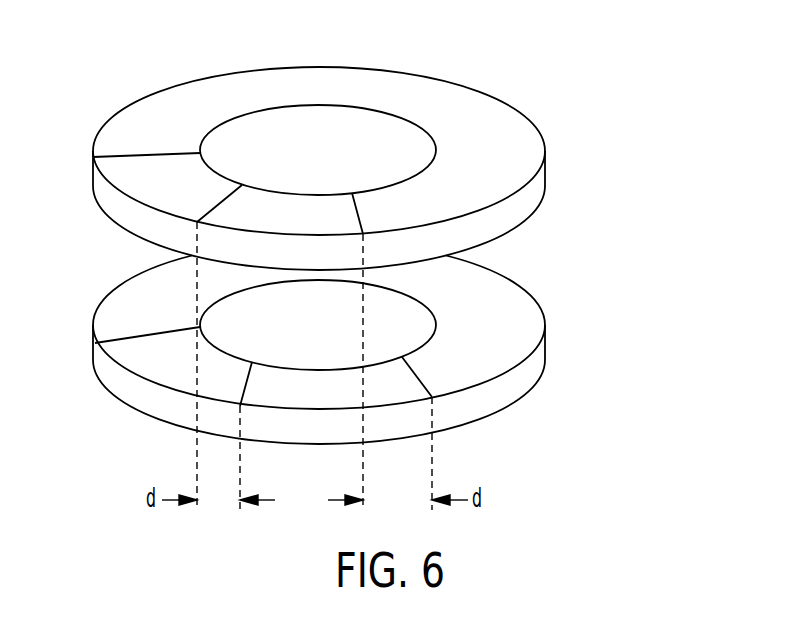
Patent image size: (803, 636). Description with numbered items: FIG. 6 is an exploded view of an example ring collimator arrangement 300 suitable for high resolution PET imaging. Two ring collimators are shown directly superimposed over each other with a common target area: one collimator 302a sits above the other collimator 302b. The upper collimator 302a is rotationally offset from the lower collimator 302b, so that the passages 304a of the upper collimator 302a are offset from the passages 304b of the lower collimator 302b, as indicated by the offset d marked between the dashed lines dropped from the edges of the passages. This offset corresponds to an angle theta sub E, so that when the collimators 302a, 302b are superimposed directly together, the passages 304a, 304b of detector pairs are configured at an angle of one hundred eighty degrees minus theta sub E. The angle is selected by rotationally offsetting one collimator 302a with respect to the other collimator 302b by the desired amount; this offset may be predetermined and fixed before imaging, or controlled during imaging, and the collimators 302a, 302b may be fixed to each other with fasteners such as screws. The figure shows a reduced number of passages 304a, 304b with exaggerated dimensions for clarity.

The stacked disc assembly 300 is at (615, 113).
The collimator 302a is at (472, 107).
The collimator 302b is at (523, 315).
The passages 304a is at (222, 203).
The passages 304b is at (250, 380).